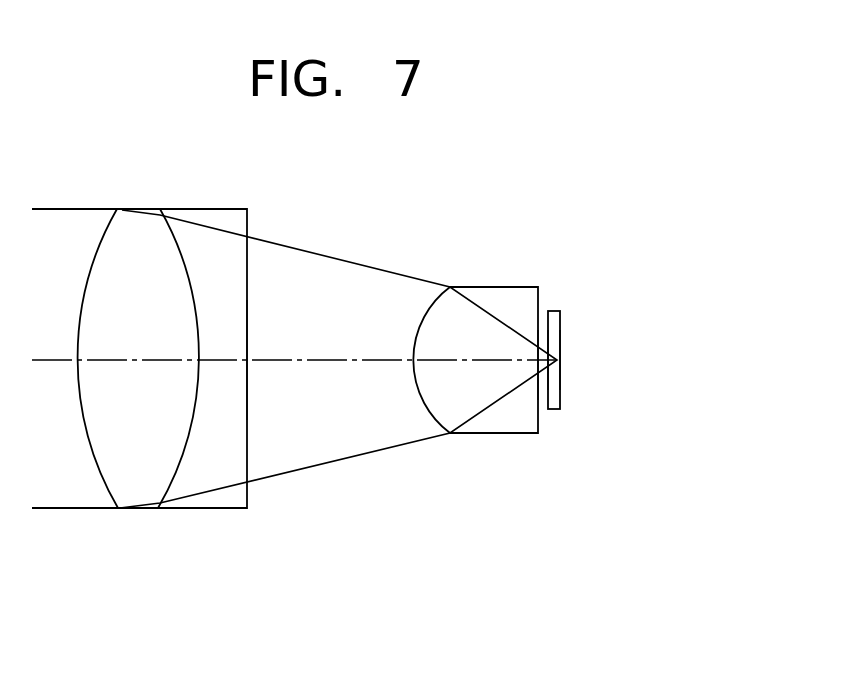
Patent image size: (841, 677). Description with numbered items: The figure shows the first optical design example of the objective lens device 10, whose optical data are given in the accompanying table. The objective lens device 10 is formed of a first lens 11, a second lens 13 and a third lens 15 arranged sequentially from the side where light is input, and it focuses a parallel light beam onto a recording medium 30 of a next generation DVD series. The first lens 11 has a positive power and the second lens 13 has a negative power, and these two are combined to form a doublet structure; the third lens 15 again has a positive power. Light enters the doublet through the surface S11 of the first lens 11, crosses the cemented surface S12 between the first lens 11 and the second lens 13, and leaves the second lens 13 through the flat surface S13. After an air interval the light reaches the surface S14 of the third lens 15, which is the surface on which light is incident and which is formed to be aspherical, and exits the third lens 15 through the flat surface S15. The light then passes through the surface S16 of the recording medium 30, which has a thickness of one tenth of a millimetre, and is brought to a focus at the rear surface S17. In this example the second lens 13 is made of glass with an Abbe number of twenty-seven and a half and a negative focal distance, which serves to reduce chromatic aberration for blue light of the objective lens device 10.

The objective lens device 10 is at (296, 219).
The first lens 11 is at (130, 374).
The second lens 13 is at (217, 237).
The third lens 15 is at (468, 373).
The recording medium 30 is at (590, 368).
The surface S11 is at (100, 473).
The surface S12 is at (173, 475).
The surface S13 is at (247, 460).
The surface S14 is at (428, 412).
The surface S15 is at (540, 410).
The surface S16 is at (545, 409).
The surface S17 is at (560, 384).